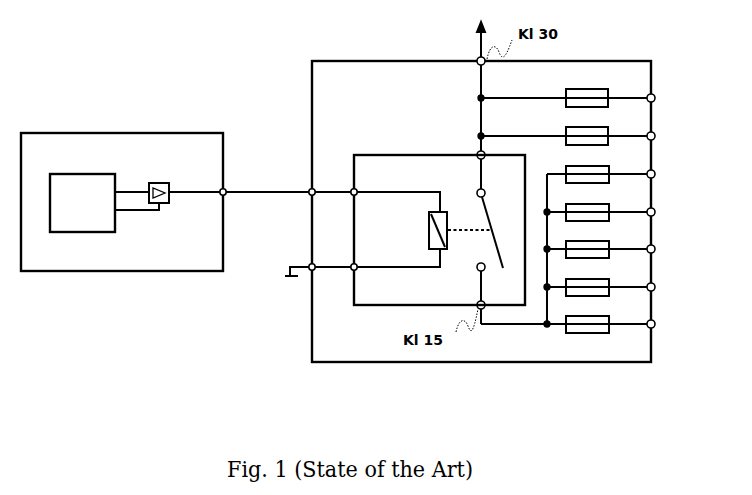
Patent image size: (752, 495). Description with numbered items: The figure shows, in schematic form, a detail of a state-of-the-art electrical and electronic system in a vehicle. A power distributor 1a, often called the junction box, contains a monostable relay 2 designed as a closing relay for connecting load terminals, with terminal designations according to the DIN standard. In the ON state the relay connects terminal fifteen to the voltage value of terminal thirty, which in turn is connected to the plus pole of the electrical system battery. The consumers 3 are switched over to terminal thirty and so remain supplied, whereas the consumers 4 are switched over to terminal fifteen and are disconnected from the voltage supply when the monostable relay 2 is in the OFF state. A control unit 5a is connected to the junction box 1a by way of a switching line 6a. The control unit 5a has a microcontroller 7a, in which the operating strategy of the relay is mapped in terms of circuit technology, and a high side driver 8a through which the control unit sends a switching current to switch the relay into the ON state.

The power distributor 1a is at (652, 61).
The monostable relay 2 is at (385, 155).
The consumers 3 is at (662, 88).
The consumers 4 is at (672, 165).
The control unit 5a is at (142, 189).
The switching line 6a is at (245, 192).
The microcontroller 7a is at (82, 203).
The high side driver 8a is at (160, 183).